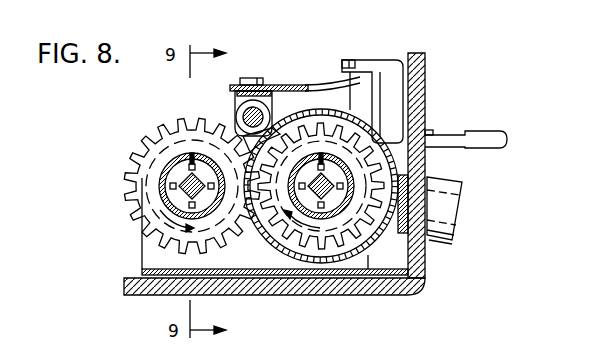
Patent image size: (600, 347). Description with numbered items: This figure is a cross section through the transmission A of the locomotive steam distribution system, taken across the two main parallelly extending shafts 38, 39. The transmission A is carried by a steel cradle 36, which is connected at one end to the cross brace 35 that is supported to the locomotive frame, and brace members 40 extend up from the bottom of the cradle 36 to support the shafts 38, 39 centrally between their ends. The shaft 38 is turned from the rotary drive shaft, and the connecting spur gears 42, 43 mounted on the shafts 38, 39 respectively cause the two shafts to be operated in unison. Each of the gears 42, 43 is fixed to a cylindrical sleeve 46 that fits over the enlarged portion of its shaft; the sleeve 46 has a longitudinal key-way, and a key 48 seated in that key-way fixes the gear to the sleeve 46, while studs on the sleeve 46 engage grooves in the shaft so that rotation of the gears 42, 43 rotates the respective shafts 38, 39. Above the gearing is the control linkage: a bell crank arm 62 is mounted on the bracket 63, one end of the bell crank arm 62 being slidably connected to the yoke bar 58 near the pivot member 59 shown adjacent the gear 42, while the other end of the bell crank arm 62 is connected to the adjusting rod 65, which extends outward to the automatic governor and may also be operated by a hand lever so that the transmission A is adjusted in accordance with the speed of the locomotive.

The cross brace 35 is at (418, 92).
The steel cradle 36 is at (356, 293).
The transmission shaft 38 is at (330, 207).
The transmission shaft 39 is at (140, 177).
The brace member 40 is at (232, 262).
The spur gear 42 is at (343, 108).
The spur gear 43 is at (152, 128).
The cylindrical sleeve 46 is at (200, 213).
The key 48 is at (188, 158).
The yoke bar 58 is at (234, 88).
The pawl pivot 59 is at (240, 114).
The bell crank arm 62 is at (322, 80).
The bracket 63 is at (374, 62).
The adjusting rod 65 is at (480, 147).
The transmission A is at (377, 272).